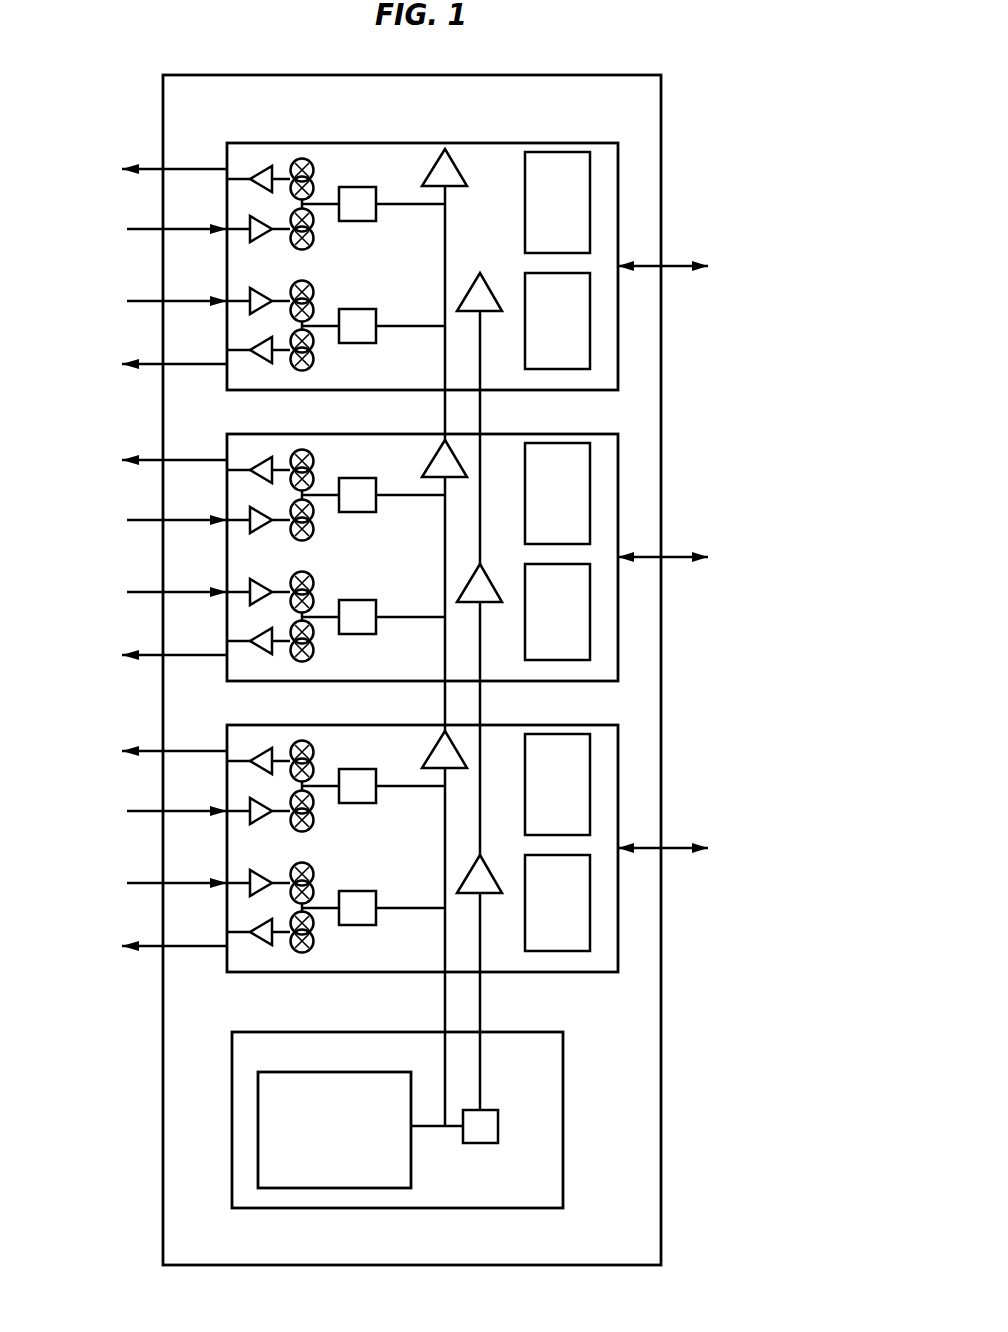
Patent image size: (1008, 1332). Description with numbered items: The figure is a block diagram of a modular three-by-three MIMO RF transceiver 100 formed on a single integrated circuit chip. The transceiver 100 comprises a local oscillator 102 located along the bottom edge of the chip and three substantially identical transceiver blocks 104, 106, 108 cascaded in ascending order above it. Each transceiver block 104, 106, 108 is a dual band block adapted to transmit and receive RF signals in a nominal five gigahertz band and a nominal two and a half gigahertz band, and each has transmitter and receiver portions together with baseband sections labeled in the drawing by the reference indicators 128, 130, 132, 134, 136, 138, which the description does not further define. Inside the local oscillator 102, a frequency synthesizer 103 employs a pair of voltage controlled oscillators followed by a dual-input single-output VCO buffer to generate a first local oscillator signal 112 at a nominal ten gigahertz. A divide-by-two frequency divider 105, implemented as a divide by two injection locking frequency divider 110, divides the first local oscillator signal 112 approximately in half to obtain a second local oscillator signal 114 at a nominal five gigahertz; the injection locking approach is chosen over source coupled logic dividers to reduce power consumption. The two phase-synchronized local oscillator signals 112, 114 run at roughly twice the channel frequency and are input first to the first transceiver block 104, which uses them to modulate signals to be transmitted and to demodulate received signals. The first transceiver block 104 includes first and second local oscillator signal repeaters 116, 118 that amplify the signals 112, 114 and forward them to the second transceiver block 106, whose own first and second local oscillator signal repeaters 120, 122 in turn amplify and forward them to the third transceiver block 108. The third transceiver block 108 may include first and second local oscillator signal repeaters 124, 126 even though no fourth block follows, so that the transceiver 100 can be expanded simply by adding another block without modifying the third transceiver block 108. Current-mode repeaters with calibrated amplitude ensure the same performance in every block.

The modular 3×3 MIMO RF transceiver 100 is at (662, 121).
The local oscillator 102 is at (429, 1138).
The frequency synthesizer 103 is at (370, 1188).
The first transceiver block 104 is at (443, 855).
The divide-by-two frequency divider 105 is at (544, 1148).
The second transceiver block 106 is at (443, 541).
The third transceiver block 108 is at (443, 250).
The divide by 2 ILFD 110 is at (498, 1128).
The first local oscillator signal 112 is at (442, 1058).
The second local oscillator signal 114 is at (482, 1057).
The first local oscillator signal repeater 116 is at (414, 730).
The second local oscillator signal repeater 118 is at (490, 792).
The first local oscillator signal repeater 120 is at (414, 439).
The second local oscillator signal repeater 122 is at (490, 501).
The first local oscillator signal repeater 124 is at (414, 148).
The second local oscillator signal repeater 126 is at (493, 150).
The receive baseband section block C 128 is at (628, 936).
The transmit baseband section block C 130 is at (652, 783).
The receive baseband section block B 132 is at (652, 614).
The baseband interface block B 134 is at (707, 516).
The receive baseband section block A 136 is at (633, 321).
The baseband interface block A 138 is at (707, 227).